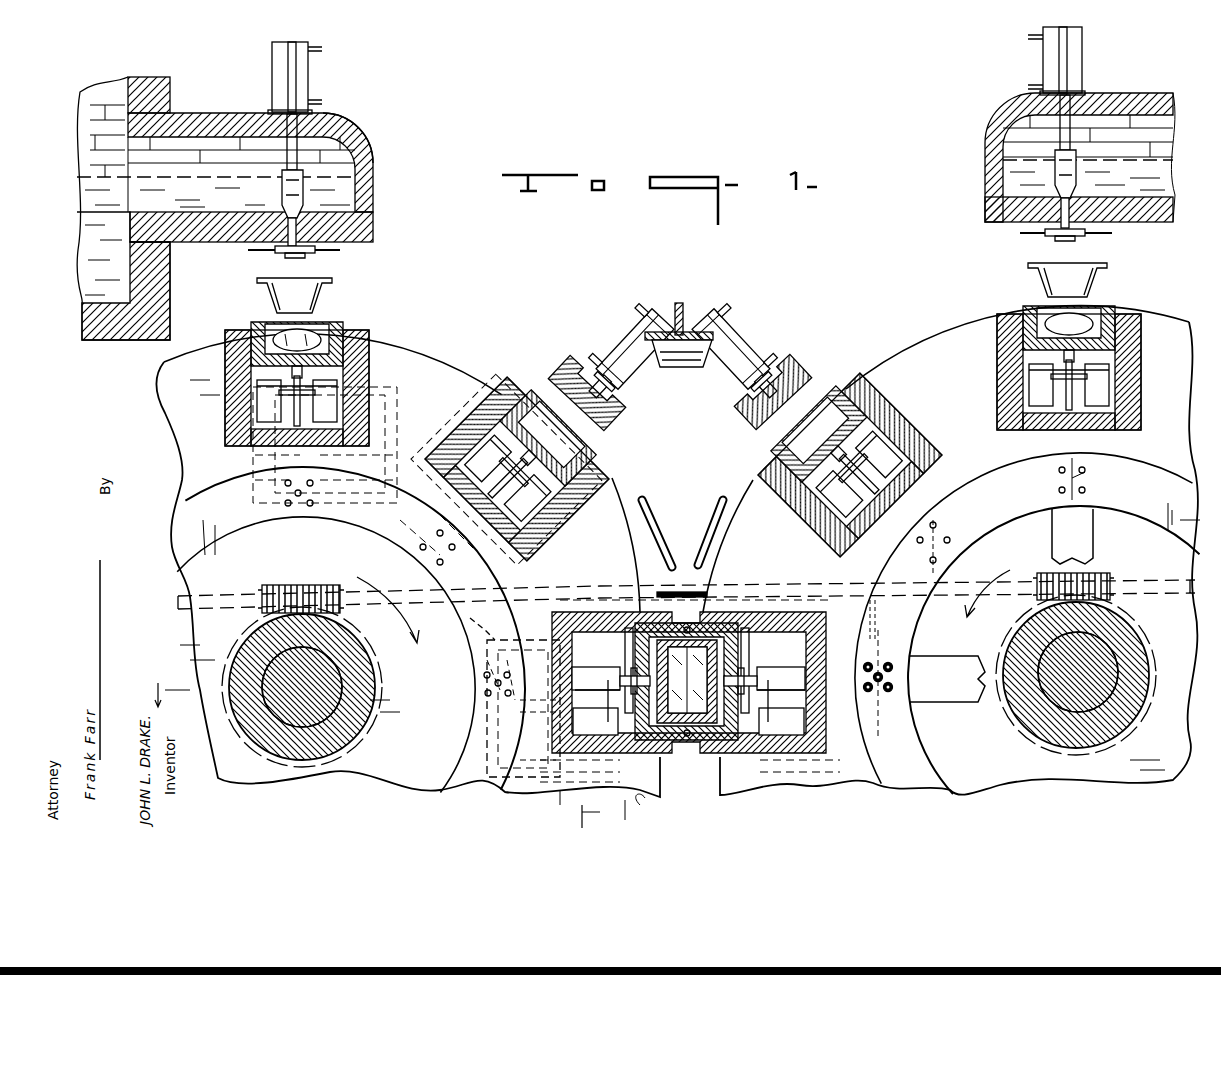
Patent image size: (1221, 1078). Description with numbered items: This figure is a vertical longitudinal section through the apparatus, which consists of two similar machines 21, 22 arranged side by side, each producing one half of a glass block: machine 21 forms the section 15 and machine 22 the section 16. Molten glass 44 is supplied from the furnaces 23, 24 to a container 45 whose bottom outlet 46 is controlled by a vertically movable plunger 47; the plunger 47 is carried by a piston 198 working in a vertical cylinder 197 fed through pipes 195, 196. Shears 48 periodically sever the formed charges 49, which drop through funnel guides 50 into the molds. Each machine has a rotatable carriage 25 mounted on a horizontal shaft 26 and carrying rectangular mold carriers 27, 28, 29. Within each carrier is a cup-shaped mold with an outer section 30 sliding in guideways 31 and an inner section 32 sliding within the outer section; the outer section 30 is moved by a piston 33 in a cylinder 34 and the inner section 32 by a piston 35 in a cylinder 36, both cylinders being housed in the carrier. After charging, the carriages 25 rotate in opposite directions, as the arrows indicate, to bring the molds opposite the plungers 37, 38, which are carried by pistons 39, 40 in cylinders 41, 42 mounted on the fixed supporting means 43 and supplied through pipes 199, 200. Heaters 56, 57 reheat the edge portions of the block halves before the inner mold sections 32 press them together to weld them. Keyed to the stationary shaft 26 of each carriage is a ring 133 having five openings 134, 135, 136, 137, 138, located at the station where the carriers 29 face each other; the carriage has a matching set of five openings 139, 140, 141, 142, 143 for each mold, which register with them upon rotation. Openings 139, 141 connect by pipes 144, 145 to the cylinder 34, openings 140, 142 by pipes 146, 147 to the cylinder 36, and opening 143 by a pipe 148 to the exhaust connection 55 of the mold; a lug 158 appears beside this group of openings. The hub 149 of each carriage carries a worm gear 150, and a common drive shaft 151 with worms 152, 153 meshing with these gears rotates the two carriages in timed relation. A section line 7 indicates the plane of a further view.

The section line 7 is at (376, 749).
The section of the block 15 is at (548, 400).
The section of the block 16 is at (812, 398).
The machine 21 is at (408, 340).
The machine 22 is at (888, 344).
The furnace 23 is at (375, 148).
The furnace 24 is at (980, 149).
The rotatable carriage 25 is at (445, 788).
The horizontal shaft 26 is at (278, 685).
The mold carrier 27 is at (284, 377).
The mold carrier 28 is at (1065, 371).
The mold carrier 29 is at (702, 624).
The outer mold section 30 is at (284, 388).
The guideways 31 is at (640, 603).
The inner mold section 32 is at (297, 337).
The piston 33 is at (297, 401).
The cylinder 34 is at (269, 401).
The piston 35 is at (297, 372).
The cylinder 36 is at (325, 401).
The plunger 37 is at (576, 367).
The plunger 38 is at (795, 366).
The piston 39 is at (612, 389).
The piston 40 is at (754, 390).
The cylinder 41 is at (640, 323).
The cylinder 42 is at (736, 340).
The fixed supporting means 43 is at (676, 308).
The molten glass 44 is at (80, 243).
The container 45 is at (373, 173).
The outlet 46 is at (285, 223).
The vertically movable plunger 47 is at (282, 174).
The shears 48 is at (300, 252).
The charges 49 is at (284, 331).
The funnel guides 50 is at (325, 288).
The exhaust connection 55 is at (687, 681).
The heater 56 is at (658, 516).
The heater 57 is at (712, 518).
The ring 133 is at (1138, 483).
The opening 134 is at (865, 695).
The opening 135 is at (866, 661).
The opening 136 is at (890, 692).
The opening 137 is at (888, 662).
The opening 138 is at (878, 685).
The opening 139 is at (508, 697).
The opening 140 is at (486, 672).
The opening 141 is at (486, 694).
The opening 142 is at (505, 675).
The opening 143 is at (496, 683).
The pipe 144 is at (506, 786).
The pipe 145 is at (552, 788).
The pipe 146 is at (530, 638).
The pipe 147 is at (472, 622).
The pipe 148 is at (540, 710).
The hub 149 is at (340, 750).
The worm gear 150 is at (262, 628).
The common drive shaft 151 is at (700, 594).
The worm 152 is at (316, 583).
The worm 153 is at (1098, 573).
The lug 158 is at (898, 670).
The pipe 195 is at (322, 100).
The pipe 196 is at (322, 45).
The vertical cylinder 197 is at (272, 74).
The piston 198 is at (287, 140).
The pipe 199 is at (648, 300).
The pipe 200 is at (596, 338).